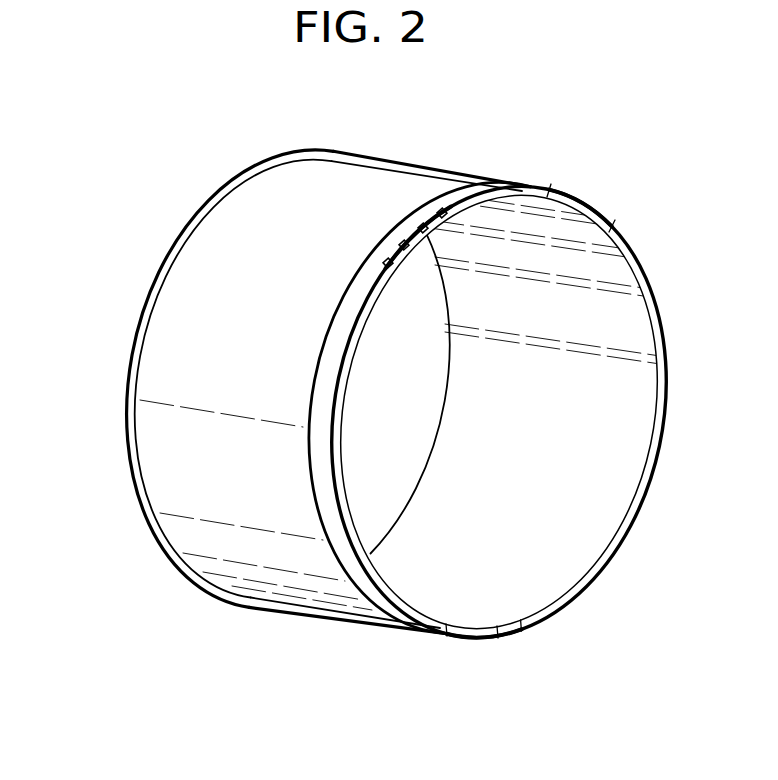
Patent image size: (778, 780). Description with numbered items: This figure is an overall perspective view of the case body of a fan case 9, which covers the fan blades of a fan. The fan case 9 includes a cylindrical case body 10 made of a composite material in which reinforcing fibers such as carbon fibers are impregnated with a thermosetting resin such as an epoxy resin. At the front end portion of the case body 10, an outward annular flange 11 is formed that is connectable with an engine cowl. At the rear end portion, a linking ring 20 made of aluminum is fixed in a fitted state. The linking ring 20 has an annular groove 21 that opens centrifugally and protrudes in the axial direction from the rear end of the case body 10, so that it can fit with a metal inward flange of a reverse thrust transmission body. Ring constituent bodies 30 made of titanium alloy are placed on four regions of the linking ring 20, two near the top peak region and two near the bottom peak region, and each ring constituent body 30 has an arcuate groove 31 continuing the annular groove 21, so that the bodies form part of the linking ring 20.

The fan case 9 is at (580, 181).
The case body 10 is at (190, 447).
The outward annular flange 11 is at (132, 364).
The linking ring 20 is at (327, 397).
The annular groove 21 is at (360, 333).
The ring constituent body 30 is at (590, 213).
The arcuate groove 31 is at (391, 262).